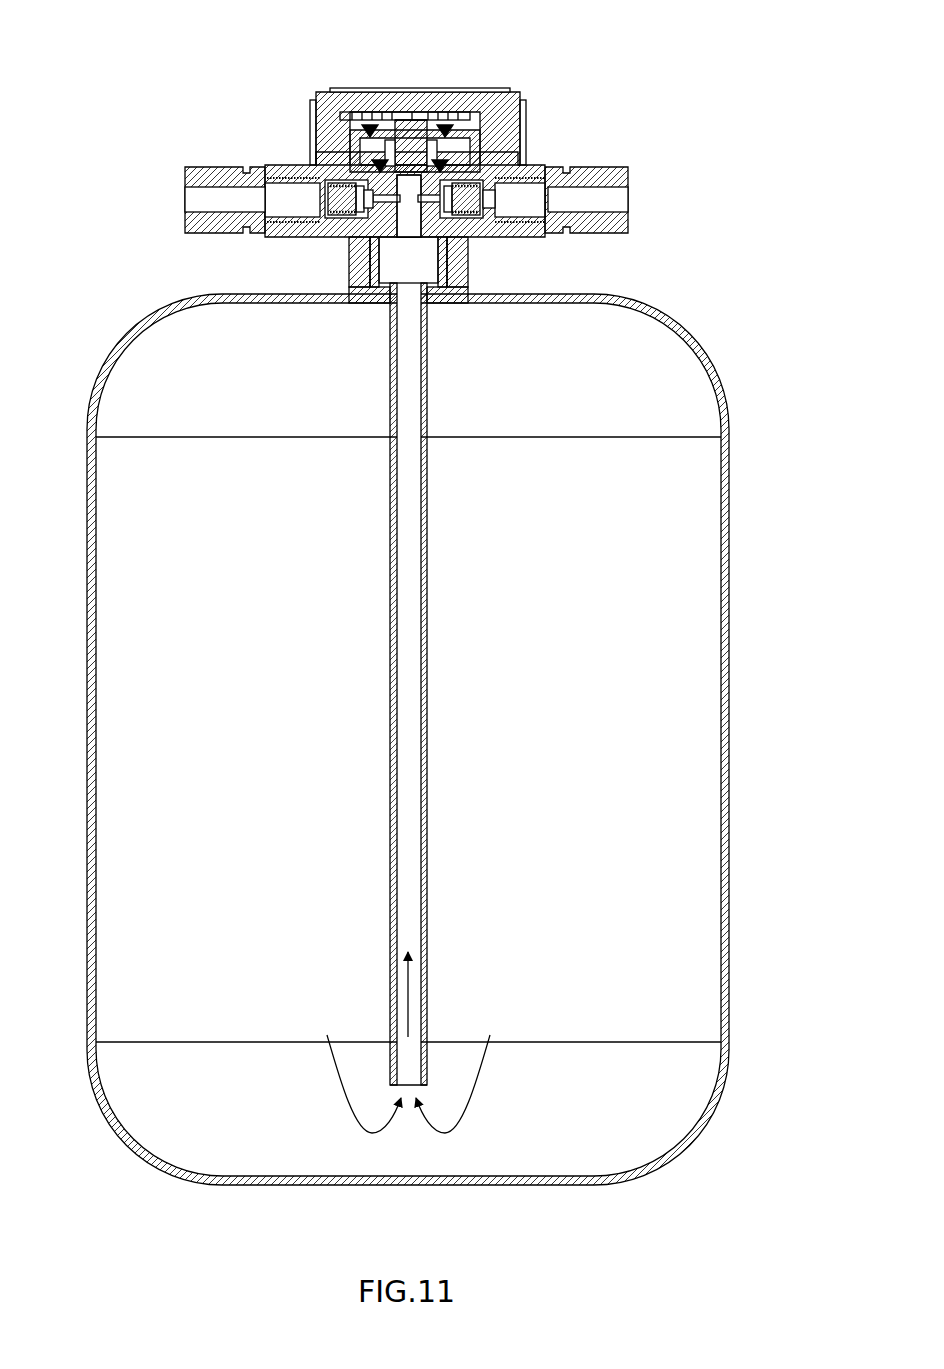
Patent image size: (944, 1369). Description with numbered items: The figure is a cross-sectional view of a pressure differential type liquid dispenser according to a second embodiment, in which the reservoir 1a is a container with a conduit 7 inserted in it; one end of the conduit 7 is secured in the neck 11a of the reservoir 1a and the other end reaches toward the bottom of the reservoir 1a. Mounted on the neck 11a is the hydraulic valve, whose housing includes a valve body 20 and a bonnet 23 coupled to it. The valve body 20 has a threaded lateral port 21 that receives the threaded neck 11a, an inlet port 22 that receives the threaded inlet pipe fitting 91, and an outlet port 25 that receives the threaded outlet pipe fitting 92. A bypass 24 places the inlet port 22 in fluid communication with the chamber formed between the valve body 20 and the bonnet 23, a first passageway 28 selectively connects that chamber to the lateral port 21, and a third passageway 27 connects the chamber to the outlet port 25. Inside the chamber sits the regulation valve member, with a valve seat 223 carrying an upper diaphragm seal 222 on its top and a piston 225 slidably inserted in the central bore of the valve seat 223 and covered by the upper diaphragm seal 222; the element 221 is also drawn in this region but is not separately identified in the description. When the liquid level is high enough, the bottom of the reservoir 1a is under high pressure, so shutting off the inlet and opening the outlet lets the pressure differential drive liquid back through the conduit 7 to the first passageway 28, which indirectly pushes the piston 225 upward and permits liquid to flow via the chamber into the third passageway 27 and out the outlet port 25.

The reservoir 1a is at (664, 300).
The conduit 7 is at (420, 605).
The neck 11a is at (376, 265).
The valve body 20 is at (490, 232).
The lateral port 21 is at (445, 248).
The inlet port 22 is at (538, 185).
The bonnet 23 is at (405, 92).
The bypass 24 is at (503, 117).
The outlet port 25 is at (276, 184).
The third passageway 27 is at (365, 160).
The first passageway 28 is at (410, 233).
The inlet pipe fitting 91 is at (590, 170).
The outlet pipe fitting 92 is at (205, 170).
The inner sleeve 221 is at (488, 140).
The upper diaphragm seal 222 is at (397, 128).
The valve seat 223 is at (368, 132).
The piston 225 is at (415, 130).